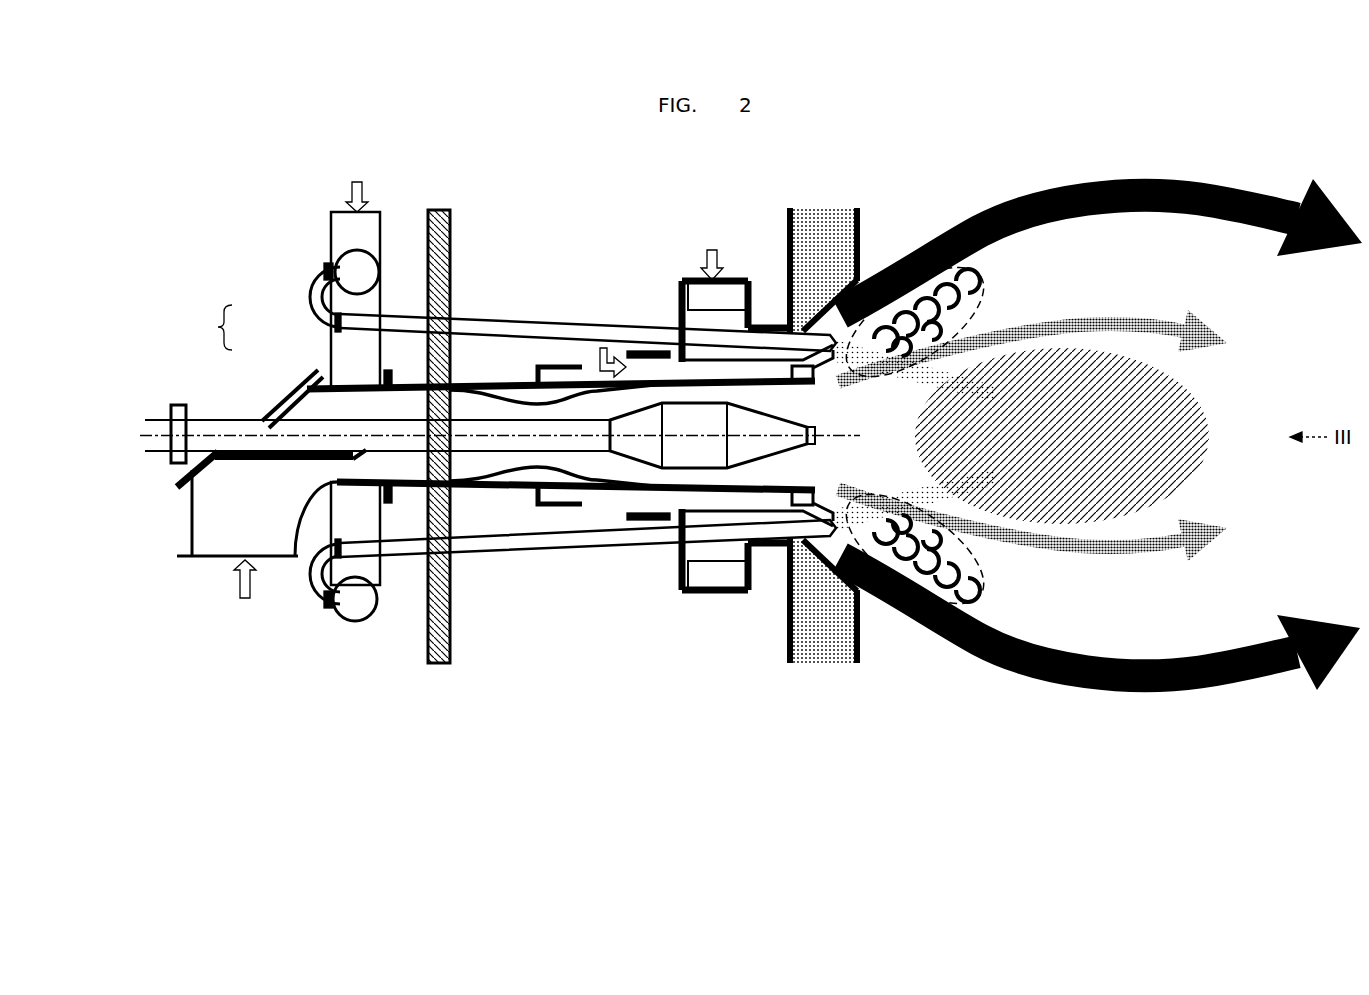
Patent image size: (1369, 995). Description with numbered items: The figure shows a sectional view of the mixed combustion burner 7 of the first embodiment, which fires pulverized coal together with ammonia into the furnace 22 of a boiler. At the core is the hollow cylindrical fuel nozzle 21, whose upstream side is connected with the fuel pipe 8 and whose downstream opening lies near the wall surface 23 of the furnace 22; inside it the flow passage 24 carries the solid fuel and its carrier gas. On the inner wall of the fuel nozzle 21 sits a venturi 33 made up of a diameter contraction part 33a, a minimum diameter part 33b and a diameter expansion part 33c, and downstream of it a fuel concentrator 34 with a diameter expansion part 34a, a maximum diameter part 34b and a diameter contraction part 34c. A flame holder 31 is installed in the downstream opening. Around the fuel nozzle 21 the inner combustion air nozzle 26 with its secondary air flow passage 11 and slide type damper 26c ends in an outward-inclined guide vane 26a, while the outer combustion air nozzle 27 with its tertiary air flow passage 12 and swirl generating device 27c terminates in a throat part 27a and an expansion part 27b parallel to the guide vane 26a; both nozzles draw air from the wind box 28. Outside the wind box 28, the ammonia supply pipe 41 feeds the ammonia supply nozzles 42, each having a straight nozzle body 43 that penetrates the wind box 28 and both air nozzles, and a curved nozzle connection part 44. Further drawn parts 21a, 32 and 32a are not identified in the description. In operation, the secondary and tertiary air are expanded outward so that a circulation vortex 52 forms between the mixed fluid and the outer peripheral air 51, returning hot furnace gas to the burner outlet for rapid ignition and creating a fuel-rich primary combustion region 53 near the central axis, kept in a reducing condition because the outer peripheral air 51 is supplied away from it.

The burner 7 is at (170, 331).
The fuel pipe 8 is at (198, 610).
The secondary air flow passage 11 is at (607, 500).
The tertiary air flow passage 12 is at (715, 560).
The fuel nozzle 21 is at (680, 588).
The fuel supply pipe 21a is at (180, 486).
The furnace 22 is at (918, 244).
The wall surface 23 is at (862, 232).
The flow passage 24 is at (561, 426).
The inner combustion air nozzle 26 is at (682, 352).
The guide vane 26a is at (798, 328).
The slide type damper 26c is at (637, 348).
The outer combustion air nozzle 27 is at (762, 548).
The throat part 27a is at (805, 240).
The expansion part 27b is at (828, 235).
The swirl generating device 27c is at (697, 284).
The wind box 28 is at (525, 259).
The flame holder 31 is at (838, 372).
The pilot fuel pipe 32 is at (160, 408).
The pilot fuel injection portion 32a is at (212, 468).
The venturi 33 is at (510, 492).
The diameter contraction part 33a is at (512, 470).
The minimum diameter part 33b is at (543, 488).
The diameter expansion part 33c is at (583, 476).
The fuel concentrator 34 is at (704, 456).
The diameter expansion part 34a is at (637, 445).
The maximum diameter part 34b is at (690, 403).
The diameter contraction part 34c is at (753, 445).
The ammonia supply pipe 41 is at (336, 224).
The ammonia supply nozzle 42 is at (517, 633).
The nozzle body 43 is at (345, 323).
The nozzle connection part 44 is at (316, 300).
The outer peripheral air 51 is at (1108, 182).
The circulation vortex 52 is at (985, 282).
The primary combustion region 53 is at (1089, 447).